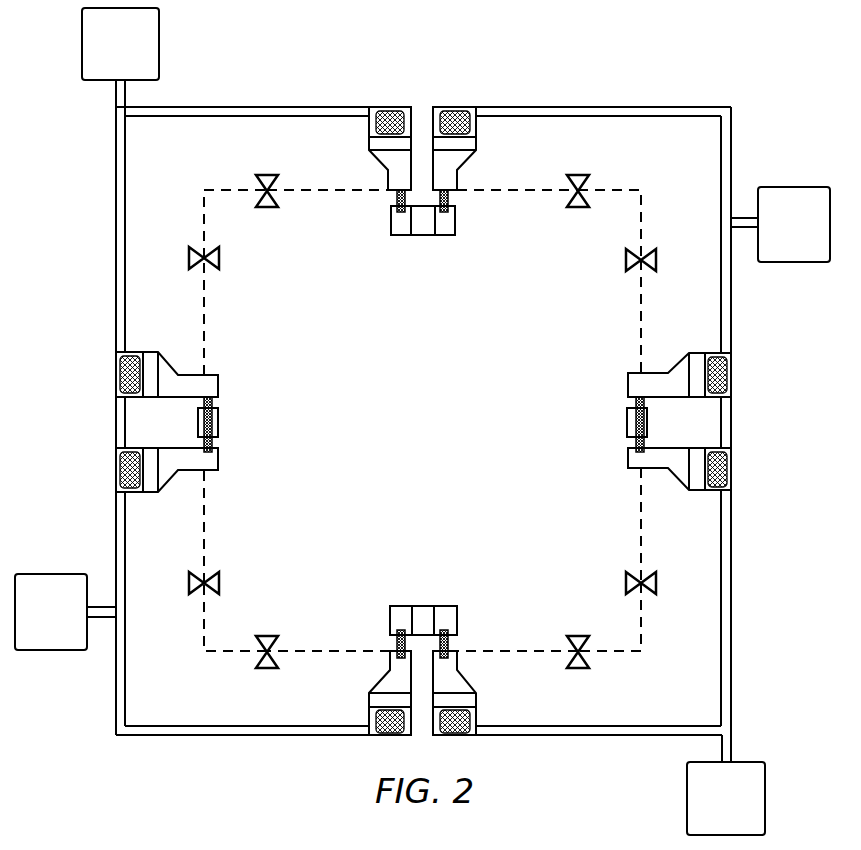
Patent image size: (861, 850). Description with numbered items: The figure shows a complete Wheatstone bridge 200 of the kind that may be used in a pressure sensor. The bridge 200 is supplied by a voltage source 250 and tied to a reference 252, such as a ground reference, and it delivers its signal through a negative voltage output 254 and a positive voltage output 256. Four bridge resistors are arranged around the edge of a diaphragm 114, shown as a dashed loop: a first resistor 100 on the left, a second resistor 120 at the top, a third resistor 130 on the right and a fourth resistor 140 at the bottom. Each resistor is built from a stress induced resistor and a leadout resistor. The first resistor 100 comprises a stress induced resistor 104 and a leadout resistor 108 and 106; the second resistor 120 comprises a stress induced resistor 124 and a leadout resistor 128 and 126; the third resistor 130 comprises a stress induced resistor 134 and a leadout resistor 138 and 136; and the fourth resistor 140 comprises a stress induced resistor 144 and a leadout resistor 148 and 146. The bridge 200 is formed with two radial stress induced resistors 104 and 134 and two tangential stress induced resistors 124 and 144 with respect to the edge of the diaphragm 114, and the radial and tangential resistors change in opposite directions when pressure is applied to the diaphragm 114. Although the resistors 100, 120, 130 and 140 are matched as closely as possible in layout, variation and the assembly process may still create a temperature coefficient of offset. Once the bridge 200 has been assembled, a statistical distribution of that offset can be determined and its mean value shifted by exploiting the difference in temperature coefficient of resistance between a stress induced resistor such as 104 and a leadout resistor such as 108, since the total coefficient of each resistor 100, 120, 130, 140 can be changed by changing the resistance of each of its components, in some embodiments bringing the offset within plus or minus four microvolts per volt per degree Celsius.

The Wheatstone bridge 200 is at (485, 62).
The first resistor 100 is at (206, 403).
The stress induced resistor 104 is at (214, 403).
The leadout resistor 106 is at (219, 421).
The leadout resistor 108 is at (170, 366).
The diaphragm 114 is at (207, 533).
The second resistor 120 is at (422, 193).
The stress induced resistor 124 is at (395, 199).
The leadout resistor 126 is at (446, 233).
The leadout resistor 128 is at (378, 160).
The third resistor 130 is at (633, 425).
The stress induced resistor 134 is at (647, 401).
The leadout resistor 136 is at (626, 430).
The leadout resistor 138 is at (680, 363).
The fourth resistor 140 is at (419, 650).
The stress induced resistor 144 is at (392, 645).
The leadout resistor 146 is at (458, 616).
The leadout resistor 148 is at (381, 682).
The voltage source 250 is at (160, 45).
The reference 252 is at (687, 797).
The negative voltage output 254 is at (55, 574).
The positive voltage output 256 is at (798, 187).